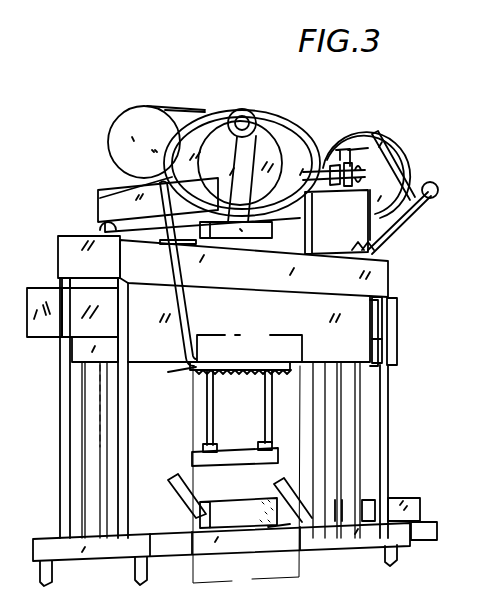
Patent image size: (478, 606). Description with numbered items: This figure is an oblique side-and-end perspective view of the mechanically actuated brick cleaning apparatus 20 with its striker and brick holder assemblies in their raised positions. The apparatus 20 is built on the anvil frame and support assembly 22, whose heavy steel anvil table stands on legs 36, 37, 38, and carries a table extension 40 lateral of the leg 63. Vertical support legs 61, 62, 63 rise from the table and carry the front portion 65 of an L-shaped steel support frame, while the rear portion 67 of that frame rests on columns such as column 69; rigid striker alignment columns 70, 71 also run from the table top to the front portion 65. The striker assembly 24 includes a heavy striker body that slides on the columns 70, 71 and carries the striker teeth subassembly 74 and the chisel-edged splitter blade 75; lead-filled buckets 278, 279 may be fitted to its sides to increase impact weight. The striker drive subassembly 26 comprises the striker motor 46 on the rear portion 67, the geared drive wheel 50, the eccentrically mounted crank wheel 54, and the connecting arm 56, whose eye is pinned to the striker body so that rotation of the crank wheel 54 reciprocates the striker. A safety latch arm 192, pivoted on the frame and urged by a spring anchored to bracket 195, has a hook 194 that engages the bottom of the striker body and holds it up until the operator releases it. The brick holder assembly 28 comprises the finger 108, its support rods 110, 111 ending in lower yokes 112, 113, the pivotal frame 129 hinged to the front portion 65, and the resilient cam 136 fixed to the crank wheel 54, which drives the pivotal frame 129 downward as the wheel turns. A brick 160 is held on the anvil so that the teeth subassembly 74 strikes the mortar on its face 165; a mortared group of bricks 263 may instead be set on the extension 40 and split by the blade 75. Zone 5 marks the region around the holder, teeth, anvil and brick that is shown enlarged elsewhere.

The zone 5 is at (328, 578).
The brick cleaning apparatus 20 is at (203, 110).
The anvil frame and support assembly 22 is at (388, 265).
The striker assembly 24 is at (58, 380).
The striker drive subassembly 26 is at (380, 123).
The brick holder assembly 28 is at (207, 418).
The leg 36 is at (40, 573).
The leg 37 is at (146, 579).
The leg 38 is at (384, 550).
The table extension 40 is at (425, 540).
The striker motor 46 is at (112, 147).
The geared drive wheel 50 is at (392, 150).
The eccentrically mounted crank wheel 54 is at (240, 163).
The connecting arm 56 is at (233, 240).
The vertical support leg 61 is at (64, 460).
The vertical support leg 62 is at (128, 511).
The vertical support leg 63 is at (388, 413).
The front portion of support frame 65 is at (60, 236).
The rear portion of support frame 67 is at (167, 484).
The column 69 is at (289, 495).
The striker alignment column 70 is at (90, 425).
The striker alignment column 71 is at (352, 392).
The striker teeth subassembly 74 is at (246, 354).
The splitter blade 75 is at (396, 352).
The finger 108 is at (223, 455).
The support rod 110 is at (207, 390).
The support rod 111 is at (266, 400).
The lower yoke 112 is at (204, 443).
The lower yoke 113 is at (260, 442).
The pivotal frame 129 is at (114, 216).
The resilient cam 136 is at (310, 198).
The brick 160 is at (246, 506).
The brick face 165 is at (270, 527).
The safety latch arm 192 is at (186, 329).
The hook 194 is at (167, 372).
The bracket 195 is at (162, 245).
The group of bricks 263 is at (398, 498).
The bucket 278 is at (33, 288).
The bucket 279 is at (386, 300).